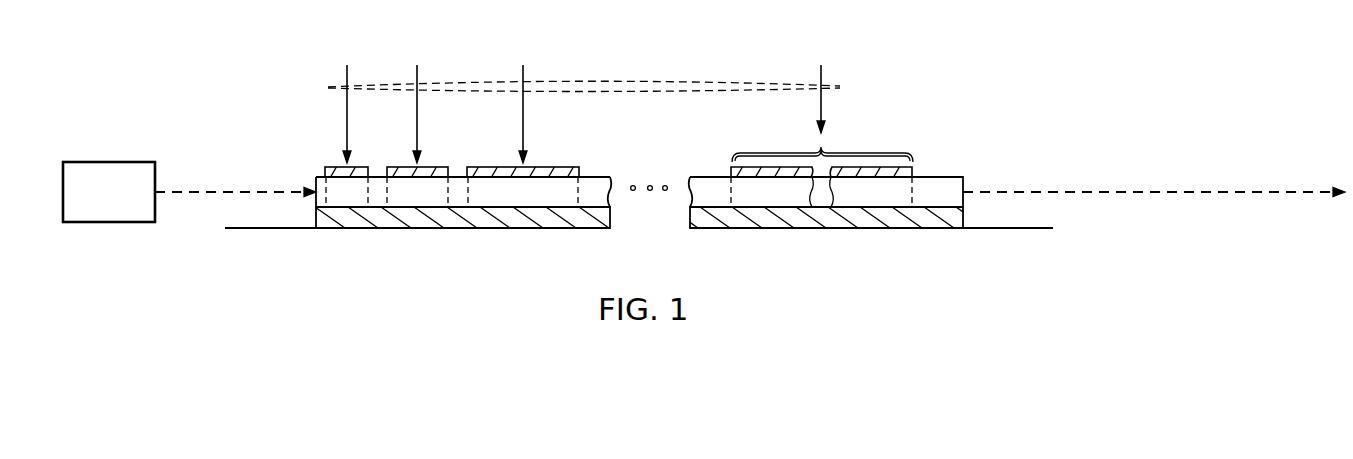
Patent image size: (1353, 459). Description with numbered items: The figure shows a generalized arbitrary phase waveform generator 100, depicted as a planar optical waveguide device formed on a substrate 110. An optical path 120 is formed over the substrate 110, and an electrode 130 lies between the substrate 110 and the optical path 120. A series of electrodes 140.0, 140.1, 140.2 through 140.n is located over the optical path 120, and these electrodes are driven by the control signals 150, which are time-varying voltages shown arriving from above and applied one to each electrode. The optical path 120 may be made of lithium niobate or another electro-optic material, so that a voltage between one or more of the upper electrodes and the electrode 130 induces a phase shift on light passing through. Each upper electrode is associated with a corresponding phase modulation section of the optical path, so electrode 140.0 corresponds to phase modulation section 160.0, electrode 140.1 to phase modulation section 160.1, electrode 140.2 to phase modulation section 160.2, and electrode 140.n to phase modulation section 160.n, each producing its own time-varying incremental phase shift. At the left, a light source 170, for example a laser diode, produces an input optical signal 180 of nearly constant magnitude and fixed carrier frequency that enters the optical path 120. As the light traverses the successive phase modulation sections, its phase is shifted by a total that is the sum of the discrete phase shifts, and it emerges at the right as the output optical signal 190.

The arbitrary phase waveform generator 100 is at (979, 65).
The substrate 110 is at (267, 230).
The optical path 120 is at (710, 177).
The electrode 130 is at (925, 218).
The electrode 140.0 is at (328, 167).
The electrode 140.1 is at (435, 167).
The electrode 140.2 is at (558, 167).
The electrode 140.n is at (913, 170).
The control signals 150 is at (328, 87).
The phase modulation section 160.0 is at (337, 200).
The phase modulation section 160.1 is at (425, 200).
The phase modulation section 160.2 is at (522, 200).
The phase modulation section 160.n is at (783, 200).
The light source 170 is at (110, 162).
The input optical signal 180 is at (205, 197).
The output optical signal 190 is at (1155, 195).